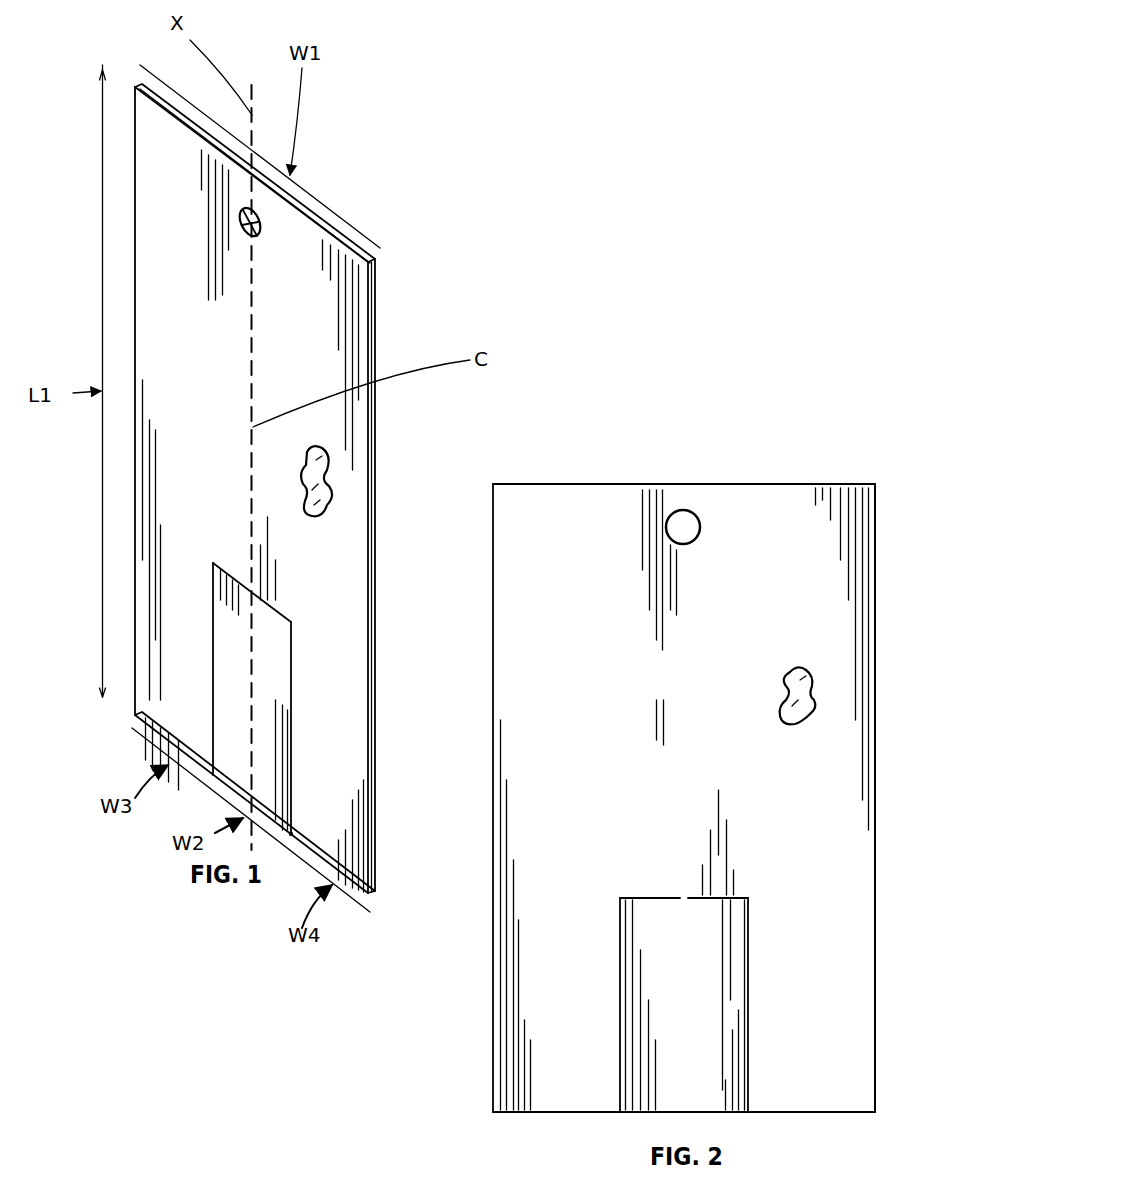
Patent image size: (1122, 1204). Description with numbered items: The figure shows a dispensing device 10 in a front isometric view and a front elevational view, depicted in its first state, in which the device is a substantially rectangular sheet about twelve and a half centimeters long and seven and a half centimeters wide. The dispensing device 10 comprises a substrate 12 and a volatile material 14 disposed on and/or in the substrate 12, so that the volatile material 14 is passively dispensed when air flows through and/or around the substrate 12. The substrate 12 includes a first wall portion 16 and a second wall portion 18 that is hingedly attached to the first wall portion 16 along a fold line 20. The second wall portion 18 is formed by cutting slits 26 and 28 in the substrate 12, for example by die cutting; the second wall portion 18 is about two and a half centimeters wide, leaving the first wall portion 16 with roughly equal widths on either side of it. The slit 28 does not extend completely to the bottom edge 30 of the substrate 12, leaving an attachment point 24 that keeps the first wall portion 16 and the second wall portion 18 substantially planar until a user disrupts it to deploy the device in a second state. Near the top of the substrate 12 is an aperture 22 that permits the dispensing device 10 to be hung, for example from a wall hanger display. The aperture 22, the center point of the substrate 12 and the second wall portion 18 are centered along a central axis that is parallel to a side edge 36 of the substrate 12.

In FIG. 1, the dispensing device 10 is at (340, 150).
In FIG. 2, the dispensing device 10 is at (866, 400).
In FIG. 1, the substrate 12 is at (373, 262).
In FIG. 2, the substrate 12 is at (848, 483).
In FIG. 1, the volatile material 14 is at (330, 475).
In FIG. 2, the volatile material 14 is at (818, 690).
In FIG. 1, the first wall portion 16 is at (327, 383).
In FIG. 2, the first wall portion 16 is at (848, 748).
In FIG. 1, the second wall portion 18 is at (270, 705).
In FIG. 2, the second wall portion 18 is at (635, 1078).
In FIG. 1, the fold line 20 is at (285, 608).
In FIG. 2, the fold line 20 is at (742, 897).
In FIG. 1, the aperture 22 is at (243, 226).
In FIG. 2, the aperture 22 is at (695, 512).
In FIG. 1, the attachment point 24 is at (293, 832).
In FIG. 2, the attachment point 24 is at (748, 1113).
In FIG. 1, the slit 26 is at (208, 693).
In FIG. 2, the slit 26 is at (617, 1000).
In FIG. 1, the slit 28 is at (297, 745).
In FIG. 2, the slit 28 is at (754, 1003).
In FIG. 1, the bottom edge 30 is at (371, 895).
In FIG. 2, the bottom edge 30 is at (506, 1113).
In FIG. 1, the side edge 36 is at (376, 512).
In FIG. 2, the side edge 36 is at (876, 787).